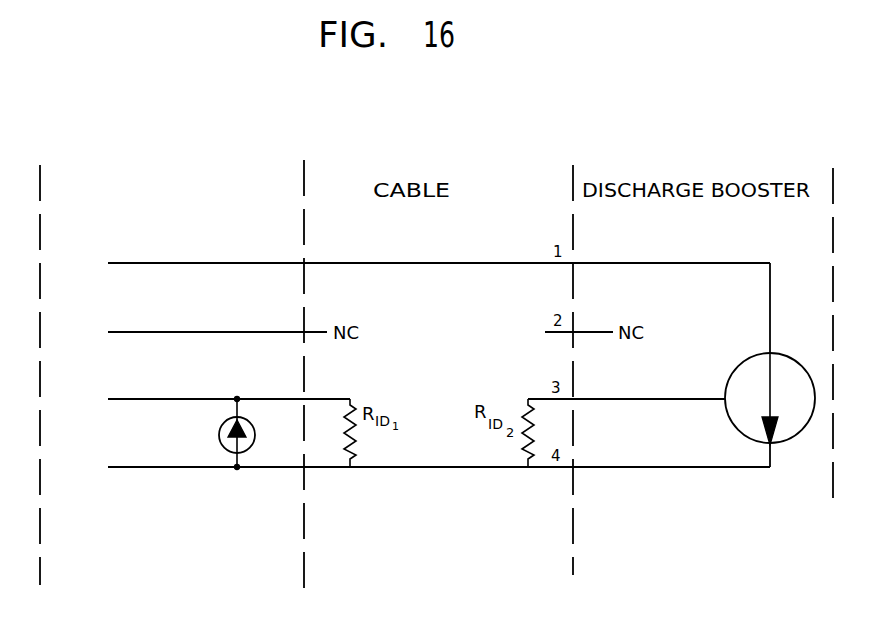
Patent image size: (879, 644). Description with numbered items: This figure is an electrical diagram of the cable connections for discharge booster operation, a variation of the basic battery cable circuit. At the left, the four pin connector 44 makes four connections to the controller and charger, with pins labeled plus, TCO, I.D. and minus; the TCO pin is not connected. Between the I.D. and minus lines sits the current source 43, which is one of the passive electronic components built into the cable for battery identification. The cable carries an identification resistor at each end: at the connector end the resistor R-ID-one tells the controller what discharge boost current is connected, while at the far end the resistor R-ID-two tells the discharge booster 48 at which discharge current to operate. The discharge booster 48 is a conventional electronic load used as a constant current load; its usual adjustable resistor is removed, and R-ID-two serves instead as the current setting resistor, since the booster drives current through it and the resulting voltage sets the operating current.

The current source 43 is at (219, 433).
The four pin connector 44 is at (89, 490).
The discharge booster 48 is at (800, 440).